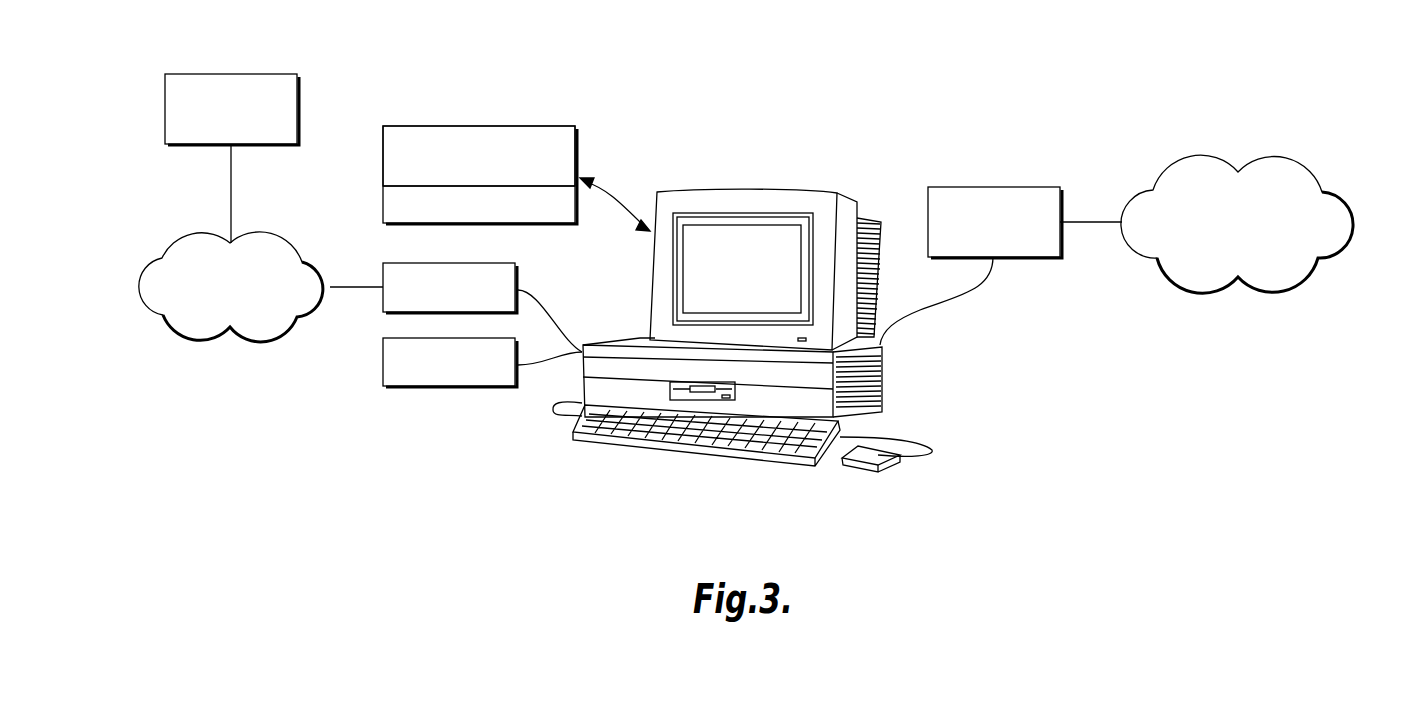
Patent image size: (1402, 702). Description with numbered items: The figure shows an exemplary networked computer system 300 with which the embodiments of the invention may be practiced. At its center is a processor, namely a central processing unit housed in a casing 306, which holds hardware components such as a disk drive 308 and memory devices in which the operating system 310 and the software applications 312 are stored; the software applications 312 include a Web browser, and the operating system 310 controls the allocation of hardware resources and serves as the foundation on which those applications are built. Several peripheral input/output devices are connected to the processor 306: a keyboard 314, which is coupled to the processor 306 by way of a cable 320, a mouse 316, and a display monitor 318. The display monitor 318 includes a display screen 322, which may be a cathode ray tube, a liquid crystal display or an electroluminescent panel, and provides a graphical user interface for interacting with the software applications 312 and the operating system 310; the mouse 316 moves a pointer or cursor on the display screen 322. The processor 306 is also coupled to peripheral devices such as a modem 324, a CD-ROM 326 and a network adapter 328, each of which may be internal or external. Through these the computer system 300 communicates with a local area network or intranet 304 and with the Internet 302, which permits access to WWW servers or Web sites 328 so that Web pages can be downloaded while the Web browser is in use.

The networked computer system 300 is at (877, 153).
The Internet 302 is at (178, 242).
The intranet network 304 is at (1300, 165).
The casing 306 is at (885, 378).
The disk drive 308 is at (705, 398).
The operating system 310 is at (383, 206).
The software applications 312 is at (433, 126).
The keyboard 314 is at (763, 458).
The mouse 316 is at (893, 468).
The display monitor 318 is at (783, 190).
The cable 320 is at (548, 421).
The display screen 322 is at (758, 272).
The modem 324 is at (518, 278).
The CD-ROM 326 is at (383, 352).
The network adapter 328 is at (215, 72).